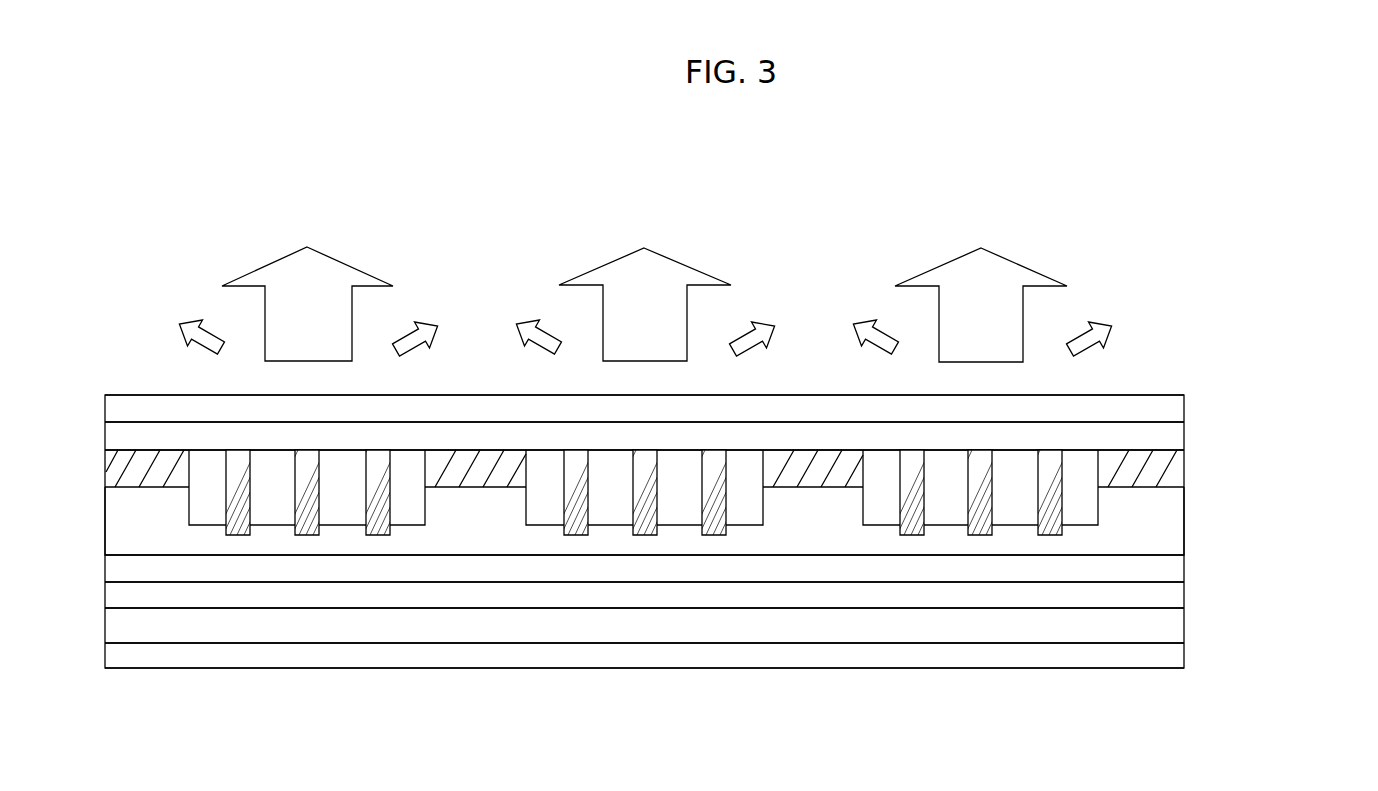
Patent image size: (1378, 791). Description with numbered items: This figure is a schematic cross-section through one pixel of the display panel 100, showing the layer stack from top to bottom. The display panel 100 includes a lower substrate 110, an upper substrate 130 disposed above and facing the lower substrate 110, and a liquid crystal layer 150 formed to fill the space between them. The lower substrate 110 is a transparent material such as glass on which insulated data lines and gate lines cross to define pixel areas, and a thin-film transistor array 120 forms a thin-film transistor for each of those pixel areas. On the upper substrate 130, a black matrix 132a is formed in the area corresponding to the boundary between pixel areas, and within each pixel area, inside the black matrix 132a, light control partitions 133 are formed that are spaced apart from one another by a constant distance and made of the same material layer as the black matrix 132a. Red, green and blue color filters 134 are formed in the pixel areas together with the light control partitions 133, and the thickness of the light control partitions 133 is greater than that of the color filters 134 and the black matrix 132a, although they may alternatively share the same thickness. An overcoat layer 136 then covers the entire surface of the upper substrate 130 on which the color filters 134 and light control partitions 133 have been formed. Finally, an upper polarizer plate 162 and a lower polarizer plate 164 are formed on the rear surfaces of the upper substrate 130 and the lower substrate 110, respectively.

The display panel 100 is at (1162, 286).
The lower substrate 110 is at (1163, 627).
The thin-film transistor array 120 is at (1163, 600).
The upper substrate 130 is at (1165, 441).
The black matrix 132a is at (1165, 473).
The light control partitions 133 is at (912, 532).
The color filters 134 is at (950, 512).
The overcoat layer 136 is at (722, 592).
The liquid crystal layer 150 is at (1163, 572).
The upper polarizer plate 162 is at (1165, 413).
The lower polarizer plate 164 is at (1168, 653).